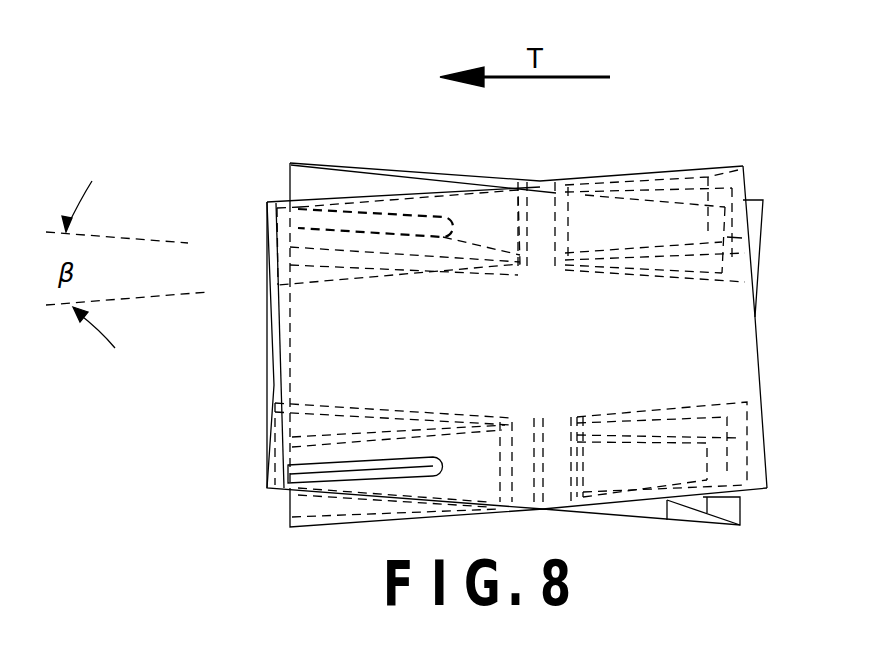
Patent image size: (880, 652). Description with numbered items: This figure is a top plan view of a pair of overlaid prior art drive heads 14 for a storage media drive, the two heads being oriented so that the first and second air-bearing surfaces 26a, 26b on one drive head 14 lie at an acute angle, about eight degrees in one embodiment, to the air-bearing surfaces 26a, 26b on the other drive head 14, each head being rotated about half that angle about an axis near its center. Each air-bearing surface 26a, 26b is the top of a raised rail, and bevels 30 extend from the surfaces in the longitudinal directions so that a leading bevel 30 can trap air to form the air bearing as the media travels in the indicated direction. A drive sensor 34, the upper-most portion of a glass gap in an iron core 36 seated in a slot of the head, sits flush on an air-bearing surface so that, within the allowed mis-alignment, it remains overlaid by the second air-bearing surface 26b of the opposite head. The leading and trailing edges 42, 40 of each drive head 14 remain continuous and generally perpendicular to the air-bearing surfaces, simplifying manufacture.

The drive head 14 is at (421, 178).
The first air bearing surface 26a is at (327, 188).
The second air bearing surface 26b is at (682, 187).
The bevel 30 is at (766, 235).
The drive sensor 34 is at (304, 200).
The iron core 36 is at (378, 195).
The trailing edge 40 is at (270, 307).
The leading edge 42 is at (758, 335).